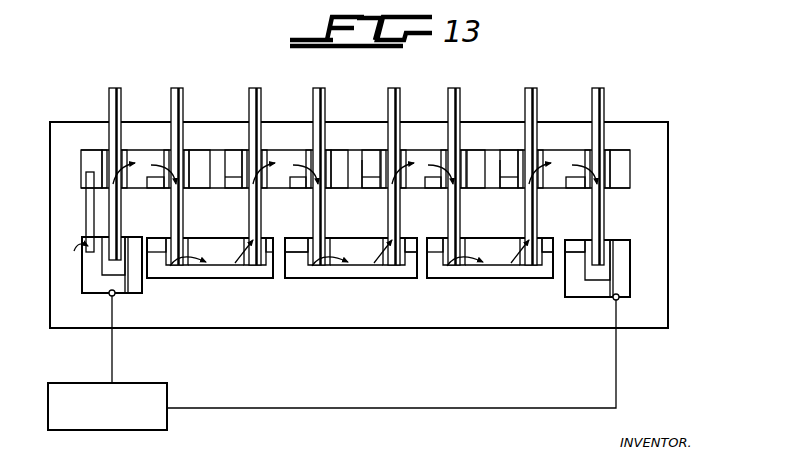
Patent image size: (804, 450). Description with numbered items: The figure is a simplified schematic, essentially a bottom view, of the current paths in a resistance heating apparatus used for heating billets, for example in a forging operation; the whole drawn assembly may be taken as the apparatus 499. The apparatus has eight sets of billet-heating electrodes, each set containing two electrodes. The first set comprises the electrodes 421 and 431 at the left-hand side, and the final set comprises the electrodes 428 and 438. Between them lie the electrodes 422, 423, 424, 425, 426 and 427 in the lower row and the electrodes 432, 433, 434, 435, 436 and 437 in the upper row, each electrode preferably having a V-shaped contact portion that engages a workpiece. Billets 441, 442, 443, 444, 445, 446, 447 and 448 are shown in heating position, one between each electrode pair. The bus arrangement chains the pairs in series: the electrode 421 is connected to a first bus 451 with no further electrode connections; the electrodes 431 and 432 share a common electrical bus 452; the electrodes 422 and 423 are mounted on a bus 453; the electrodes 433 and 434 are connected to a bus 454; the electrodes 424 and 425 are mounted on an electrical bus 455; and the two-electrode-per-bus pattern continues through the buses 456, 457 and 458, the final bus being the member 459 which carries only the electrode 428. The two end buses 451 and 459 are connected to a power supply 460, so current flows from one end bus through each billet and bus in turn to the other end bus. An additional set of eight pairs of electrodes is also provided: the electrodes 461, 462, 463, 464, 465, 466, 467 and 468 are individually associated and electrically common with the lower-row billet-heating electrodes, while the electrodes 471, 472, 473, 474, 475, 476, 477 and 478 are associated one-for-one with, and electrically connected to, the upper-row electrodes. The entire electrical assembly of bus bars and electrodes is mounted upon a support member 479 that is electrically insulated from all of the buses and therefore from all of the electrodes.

The support member 479 is at (658, 140).
The electrolytic apparatus 499 is at (86, 208).
The common electrical bus 452 is at (92, 155).
The electrode 471 is at (87, 208).
The electrode 431 is at (123, 153).
The electrode 432 is at (187, 153).
The electrode 433 is at (263, 152).
The electrode 434 is at (327, 158).
The electrode 435 is at (400, 152).
The electrode 436 is at (464, 158).
The electrode 437 is at (543, 152).
The electrode 438 is at (612, 158).
The billet 441 is at (112, 226).
The billet 442 is at (178, 226).
The billet 443 is at (257, 226).
The billet 444 is at (323, 226).
The billet 445 is at (392, 226).
The billet 446 is at (459, 226).
The billet 447 is at (537, 230).
The billet 448 is at (603, 220).
The first bus 451 is at (96, 290).
The electrode 421 is at (113, 296).
The electrode 422 is at (183, 278).
The electrode 423 is at (276, 280).
The electrode 424 is at (312, 280).
The electrode 425 is at (369, 268).
The electrode 426 is at (440, 280).
The electrode 427 is at (528, 280).
The electrode 428 is at (582, 252).
The final bus 459 is at (615, 280).
The power supply 460 is at (167, 426).
The bus 453 is at (222, 278).
The bus 454 is at (306, 140).
The electrical bus 455 is at (368, 280).
The bus 456 is at (442, 142).
The bus 457 is at (496, 280).
The bus 458 is at (562, 166).
The electrode 461 is at (72, 255).
The electrode 462 is at (166, 247).
The electrode 463 is at (219, 271).
The electrode 464 is at (309, 262).
The electrode 465 is at (372, 247).
The electrode 466 is at (444, 267).
The electrode 467 is at (516, 248).
The electrode 468 is at (566, 290).
The electrode 472 is at (166, 190).
The electrode 473 is at (237, 190).
The electrode 474 is at (309, 190).
The electrode 475 is at (377, 190).
The electrode 476 is at (447, 190).
The electrode 477 is at (516, 190).
The electrode 478 is at (585, 194).